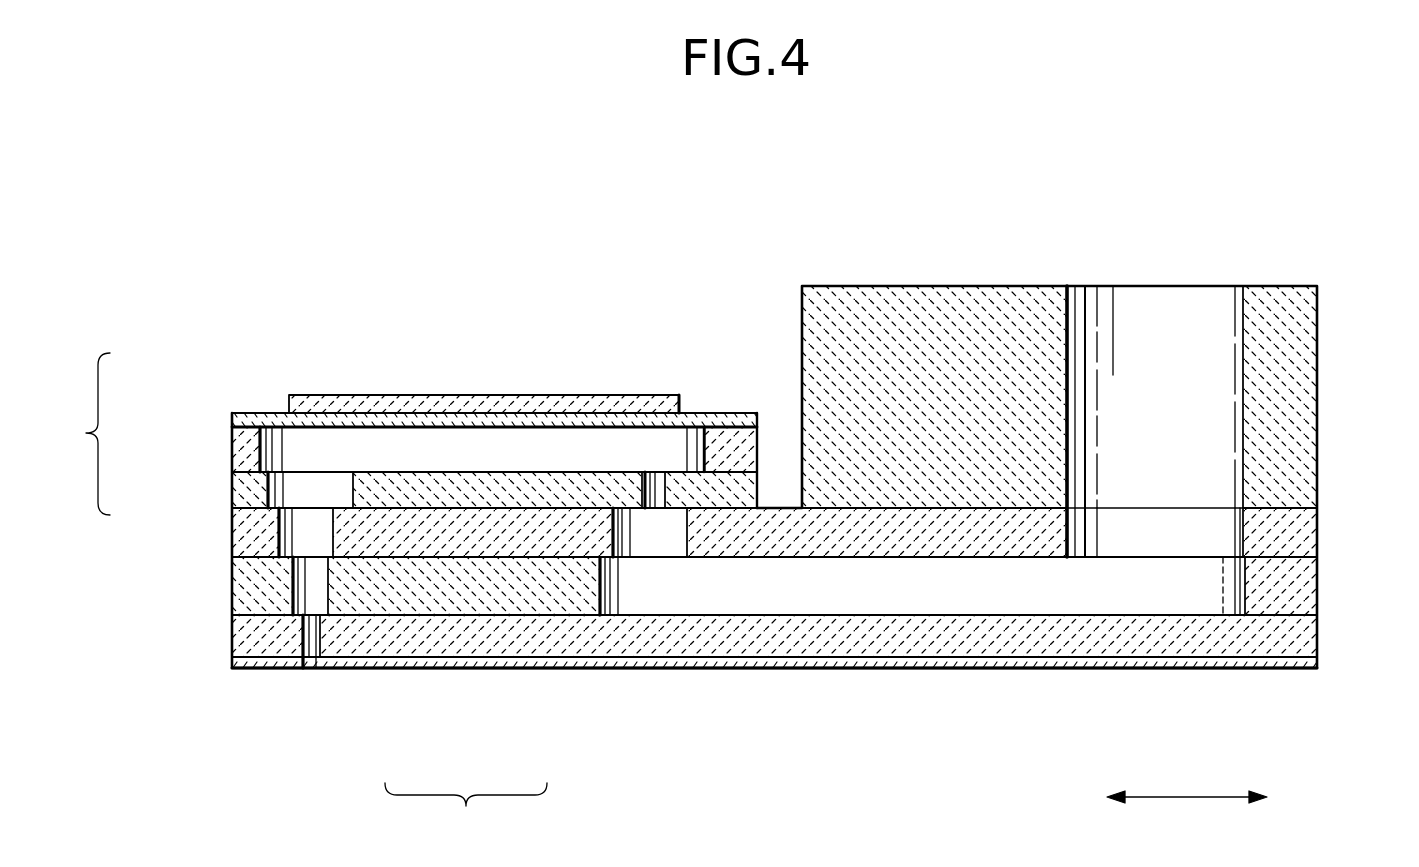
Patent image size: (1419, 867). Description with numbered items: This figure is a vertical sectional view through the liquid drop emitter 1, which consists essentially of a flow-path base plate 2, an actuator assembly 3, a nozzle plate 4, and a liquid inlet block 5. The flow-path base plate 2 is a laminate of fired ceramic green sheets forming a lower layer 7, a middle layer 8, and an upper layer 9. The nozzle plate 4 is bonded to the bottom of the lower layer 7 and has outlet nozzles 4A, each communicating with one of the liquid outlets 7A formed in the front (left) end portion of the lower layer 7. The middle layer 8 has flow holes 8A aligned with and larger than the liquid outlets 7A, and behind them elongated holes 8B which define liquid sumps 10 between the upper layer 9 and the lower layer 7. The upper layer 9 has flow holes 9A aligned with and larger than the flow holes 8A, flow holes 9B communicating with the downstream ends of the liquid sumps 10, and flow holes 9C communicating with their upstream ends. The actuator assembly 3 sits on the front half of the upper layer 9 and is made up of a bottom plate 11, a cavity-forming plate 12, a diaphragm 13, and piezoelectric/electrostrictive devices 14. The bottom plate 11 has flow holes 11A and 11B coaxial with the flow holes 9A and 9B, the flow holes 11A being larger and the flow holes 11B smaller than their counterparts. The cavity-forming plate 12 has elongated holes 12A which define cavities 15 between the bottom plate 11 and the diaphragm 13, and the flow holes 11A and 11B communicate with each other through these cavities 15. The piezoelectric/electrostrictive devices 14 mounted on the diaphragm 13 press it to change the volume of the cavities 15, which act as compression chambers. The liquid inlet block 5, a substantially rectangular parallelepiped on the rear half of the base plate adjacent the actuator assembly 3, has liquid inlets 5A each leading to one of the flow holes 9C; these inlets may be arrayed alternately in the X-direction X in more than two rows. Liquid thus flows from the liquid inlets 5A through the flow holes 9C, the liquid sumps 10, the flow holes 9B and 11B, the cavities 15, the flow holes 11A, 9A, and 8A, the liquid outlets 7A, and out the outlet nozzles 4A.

The liquid drop emitter 1 is at (977, 207).
The flow-path base plate 2 is at (466, 815).
The actuator assembly 3 is at (84, 434).
The nozzle plate 4 is at (822, 668).
The outlet nozzles 4A is at (310, 625).
The liquid inlet block 5 is at (1283, 403).
The liquid inlets 5A is at (1083, 286).
The lower layer 7 is at (520, 640).
The liquid outlets 7A is at (290, 620).
The middle layer 8 is at (460, 593).
The flow holes 8A is at (290, 570).
The elongated holes 8B is at (598, 583).
The upper layer 9 is at (405, 540).
The flow holes 9A is at (290, 522).
The flow holes 9B is at (687, 540).
The flow holes 9C is at (1120, 530).
The liquid sumps 10 is at (940, 590).
The bottom plate 11 is at (240, 485).
The flow holes 11A is at (348, 488).
The flow holes 11B is at (652, 484).
The cavity-forming plate 12 is at (240, 447).
The elongated holes 12A is at (706, 445).
The diaphragm 13 is at (233, 413).
The piezoelectric/electrostrictive devices 14 is at (290, 389).
The cavities 15 is at (483, 443).
The X-direction X is at (1185, 797).